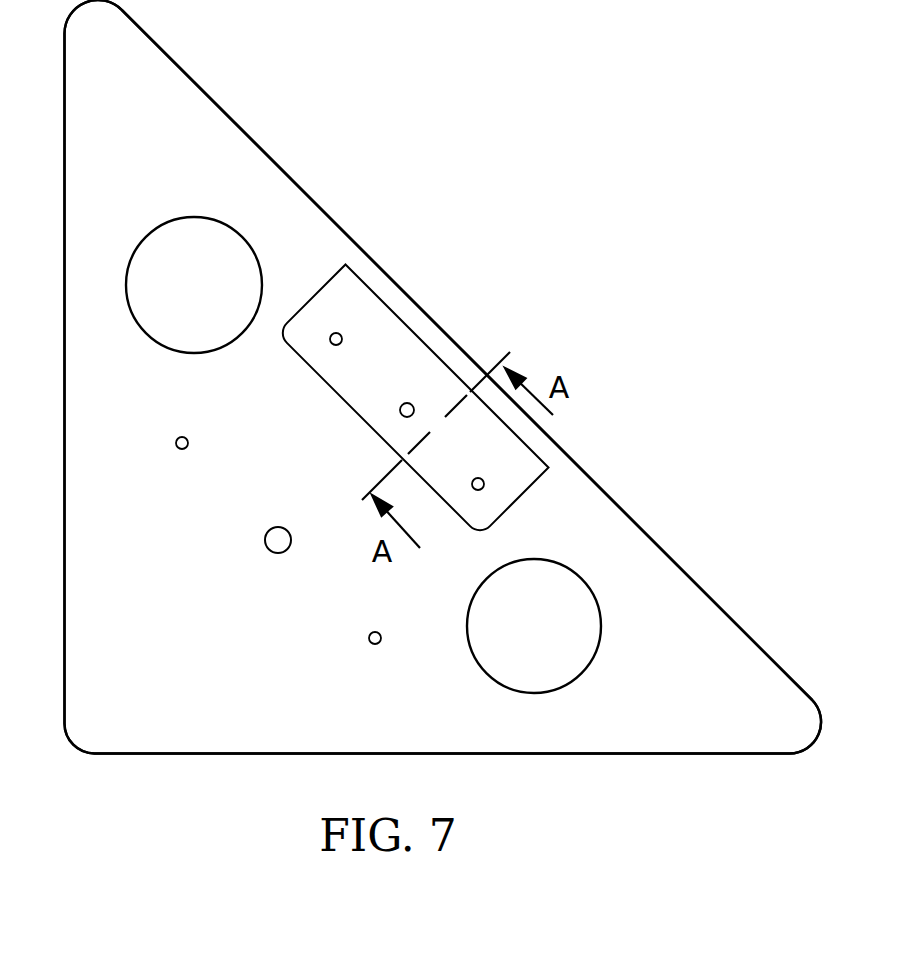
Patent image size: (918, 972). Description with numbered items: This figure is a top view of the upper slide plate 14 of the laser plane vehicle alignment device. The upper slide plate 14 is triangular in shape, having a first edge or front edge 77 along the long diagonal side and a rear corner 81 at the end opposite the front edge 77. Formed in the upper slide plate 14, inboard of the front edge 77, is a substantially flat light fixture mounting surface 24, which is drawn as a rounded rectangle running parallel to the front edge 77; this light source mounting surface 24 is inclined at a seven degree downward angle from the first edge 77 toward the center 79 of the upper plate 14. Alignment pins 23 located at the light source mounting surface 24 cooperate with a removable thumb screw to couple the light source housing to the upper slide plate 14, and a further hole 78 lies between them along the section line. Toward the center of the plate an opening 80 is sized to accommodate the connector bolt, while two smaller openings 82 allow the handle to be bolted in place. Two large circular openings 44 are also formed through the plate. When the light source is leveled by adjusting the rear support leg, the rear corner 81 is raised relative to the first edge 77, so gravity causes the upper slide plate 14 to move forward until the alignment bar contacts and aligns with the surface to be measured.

The upper slide plate 14 is at (420, 230).
The alignment pins 23 is at (331, 344).
The light source mounting surface 24 is at (387, 333).
The large circular openings 44 is at (156, 235).
The first edge 77 is at (460, 347).
The central hole 78 is at (402, 416).
The center 79 is at (315, 500).
The opening 80 is at (265, 539).
The rear corner 81 is at (95, 718).
The openings 82 is at (176, 444).